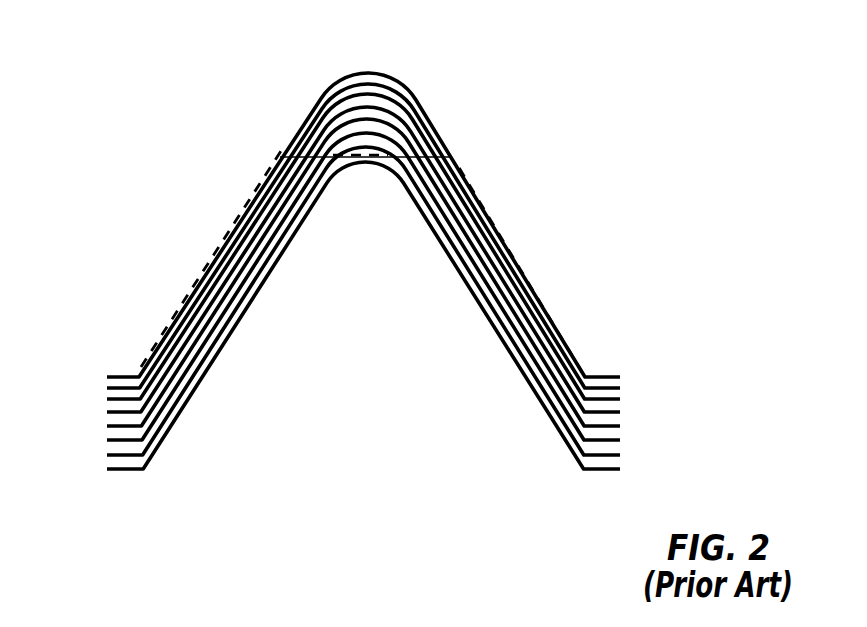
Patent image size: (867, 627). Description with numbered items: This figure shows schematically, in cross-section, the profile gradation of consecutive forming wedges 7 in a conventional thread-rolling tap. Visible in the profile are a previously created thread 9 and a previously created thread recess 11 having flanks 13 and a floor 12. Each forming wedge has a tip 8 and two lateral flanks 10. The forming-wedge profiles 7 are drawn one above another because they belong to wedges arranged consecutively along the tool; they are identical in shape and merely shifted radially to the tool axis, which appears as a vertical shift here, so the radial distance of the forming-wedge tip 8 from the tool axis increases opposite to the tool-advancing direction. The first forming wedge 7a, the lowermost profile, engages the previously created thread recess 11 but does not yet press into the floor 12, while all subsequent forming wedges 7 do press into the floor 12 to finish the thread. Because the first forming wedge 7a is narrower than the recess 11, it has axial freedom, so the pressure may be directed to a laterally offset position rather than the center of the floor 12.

The forming wedges 7 is at (403, 96).
The first forming wedge 7a is at (185, 409).
The forming-wedge tip 8 is at (363, 92).
The previously created thread 9 is at (231, 233).
The lateral flanks 10 is at (193, 345).
The previously created thread recess 11 is at (354, 278).
The floor of the thread recess 12 is at (365, 153).
The flanks of the thread recess 13 is at (193, 293).